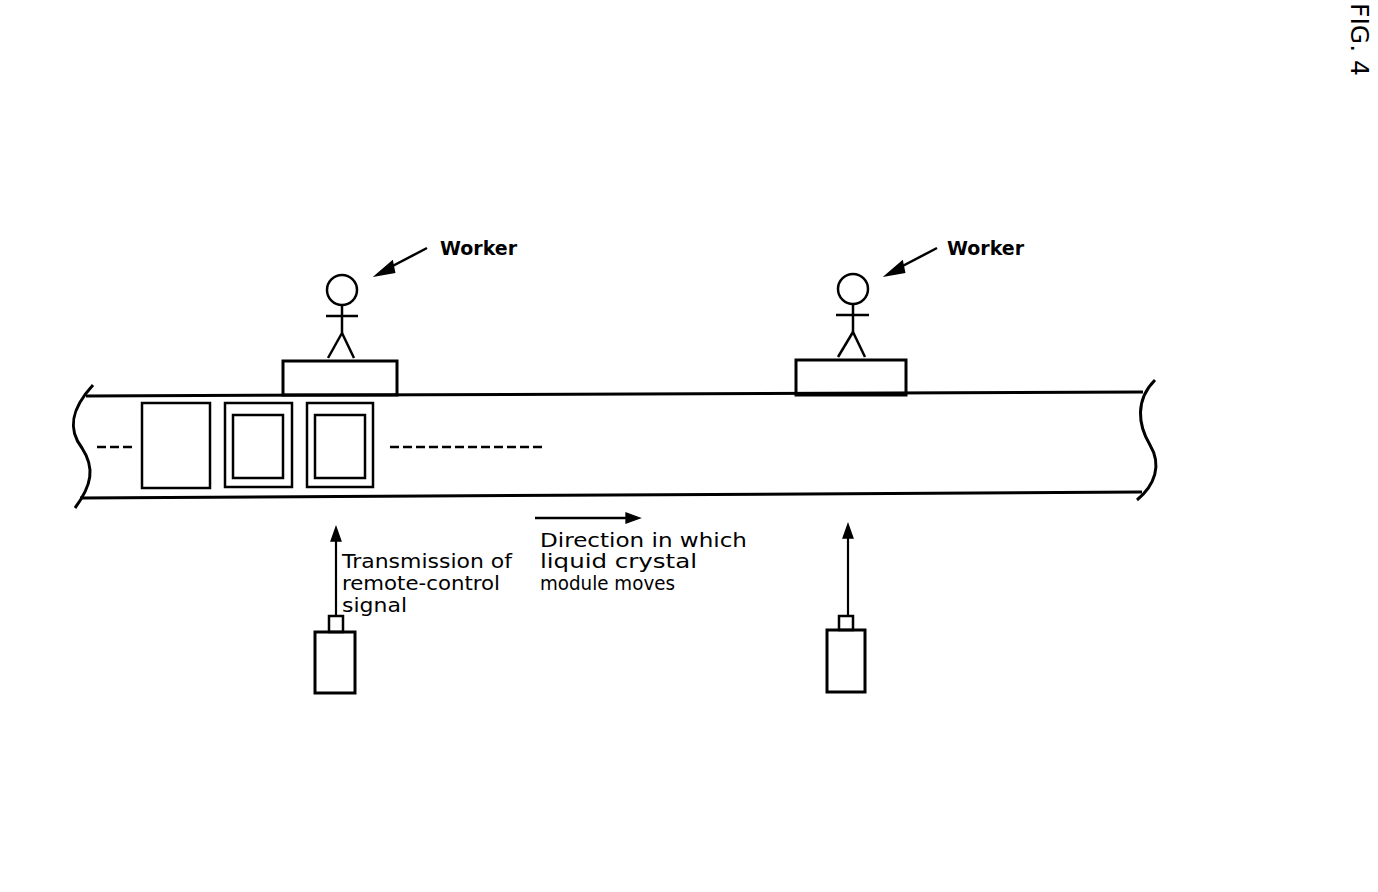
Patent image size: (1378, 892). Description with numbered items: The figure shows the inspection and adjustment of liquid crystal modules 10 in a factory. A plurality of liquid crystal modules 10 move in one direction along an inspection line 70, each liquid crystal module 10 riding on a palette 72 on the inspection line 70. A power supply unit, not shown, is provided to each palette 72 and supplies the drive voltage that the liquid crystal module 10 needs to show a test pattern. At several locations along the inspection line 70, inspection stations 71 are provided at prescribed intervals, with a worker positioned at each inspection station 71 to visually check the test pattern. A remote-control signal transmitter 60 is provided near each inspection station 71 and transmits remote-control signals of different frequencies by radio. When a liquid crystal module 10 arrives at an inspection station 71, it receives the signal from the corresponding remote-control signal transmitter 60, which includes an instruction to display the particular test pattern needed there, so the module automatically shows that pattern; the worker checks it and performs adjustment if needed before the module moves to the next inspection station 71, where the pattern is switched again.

The liquid crystal module 10 is at (158, 488).
The palette 72 is at (188, 489).
The inspection station 71 is at (399, 379).
The inspection line 70 is at (1050, 492).
The remote-control signal transmitter 60 is at (357, 660).